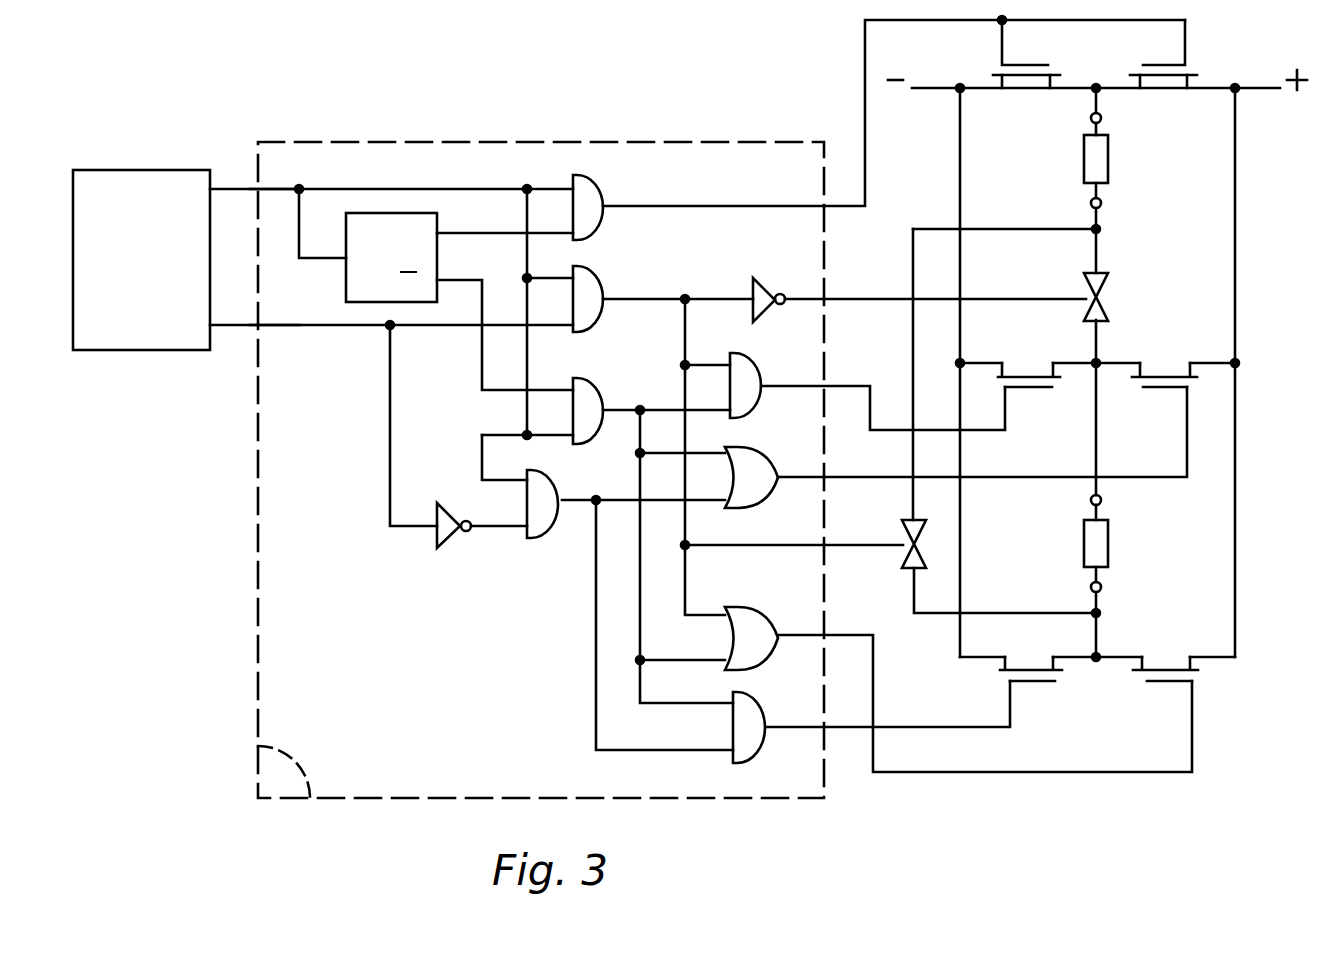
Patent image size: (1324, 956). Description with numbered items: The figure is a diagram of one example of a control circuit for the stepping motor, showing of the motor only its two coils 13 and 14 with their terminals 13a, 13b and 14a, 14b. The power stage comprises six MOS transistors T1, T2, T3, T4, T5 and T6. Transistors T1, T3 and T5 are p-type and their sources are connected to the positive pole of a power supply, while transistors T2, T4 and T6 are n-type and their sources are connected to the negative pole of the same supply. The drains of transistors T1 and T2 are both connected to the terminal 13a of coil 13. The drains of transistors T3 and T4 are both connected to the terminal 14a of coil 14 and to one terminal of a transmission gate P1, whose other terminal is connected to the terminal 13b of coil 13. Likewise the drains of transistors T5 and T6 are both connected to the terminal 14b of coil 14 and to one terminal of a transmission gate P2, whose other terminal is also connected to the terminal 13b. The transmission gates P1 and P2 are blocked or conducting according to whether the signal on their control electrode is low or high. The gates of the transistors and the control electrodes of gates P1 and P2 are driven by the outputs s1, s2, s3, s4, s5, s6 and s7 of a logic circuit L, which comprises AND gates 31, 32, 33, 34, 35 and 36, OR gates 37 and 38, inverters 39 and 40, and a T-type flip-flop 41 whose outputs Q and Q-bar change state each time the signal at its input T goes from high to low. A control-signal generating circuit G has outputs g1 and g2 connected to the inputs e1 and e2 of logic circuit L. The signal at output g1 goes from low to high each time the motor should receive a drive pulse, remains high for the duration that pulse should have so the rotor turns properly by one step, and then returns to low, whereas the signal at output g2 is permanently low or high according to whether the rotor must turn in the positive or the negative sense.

The logic circuit L is at (541, 470).
The control-signal generating circuit G is at (122, 342).
The output g1 of circuit G g1 is at (365, 191).
The output g2 of circuit G g2 is at (365, 327).
The input e1 of logic circuit L e1 is at (252, 182).
The input e2 of logic circuit L e2 is at (252, 333).
The T-type flip-flop 41 is at (363, 288).
The AND gate 31 is at (588, 199).
The AND gate 32 is at (588, 292).
The AND gate 33 is at (588, 402).
The AND gate 34 is at (540, 531).
The AND gate 35 is at (741, 380).
The AND gate 36 is at (745, 721).
The OR gate 37 is at (752, 472).
The OR gate 38 is at (752, 630).
The inverter 39 is at (449, 531).
The inverter 40 is at (770, 292).
The output s1 of logic circuit L s1 is at (840, 201).
The output s2 of logic circuit L s2 is at (840, 294).
The output s3 of logic circuit L s3 is at (840, 381).
The output s4 of logic circuit L s4 is at (840, 472).
The output s5 of logic circuit L s5 is at (840, 540).
The output s6 of logic circuit L s6 is at (826, 636).
The output s7 of logic circuit L s7 is at (826, 728).
The MOS transistor T1 is at (1165, 79).
The MOS transistor T2 is at (1028, 79).
The MOS transistor T3 is at (1163, 372).
The MOS transistor T4 is at (1027, 372).
The MOS transistor T5 is at (1163, 665).
The MOS transistor T6 is at (1023, 665).
The coil 13 is at (1097, 160).
The terminal of coil 13 13a is at (1088, 121).
The terminal of coil 13 13b is at (1088, 203).
The coil 14 is at (1098, 543).
The terminal of coil 14 14a is at (1090, 500).
The terminal of coil 14 14b is at (1090, 587).
The transmission gate P1 is at (1107, 290).
The transmission gate P2 is at (905, 558).